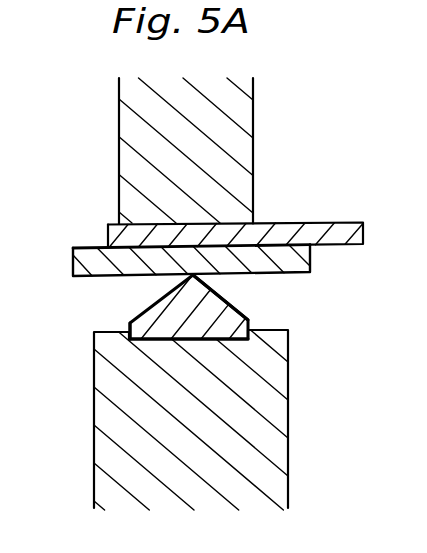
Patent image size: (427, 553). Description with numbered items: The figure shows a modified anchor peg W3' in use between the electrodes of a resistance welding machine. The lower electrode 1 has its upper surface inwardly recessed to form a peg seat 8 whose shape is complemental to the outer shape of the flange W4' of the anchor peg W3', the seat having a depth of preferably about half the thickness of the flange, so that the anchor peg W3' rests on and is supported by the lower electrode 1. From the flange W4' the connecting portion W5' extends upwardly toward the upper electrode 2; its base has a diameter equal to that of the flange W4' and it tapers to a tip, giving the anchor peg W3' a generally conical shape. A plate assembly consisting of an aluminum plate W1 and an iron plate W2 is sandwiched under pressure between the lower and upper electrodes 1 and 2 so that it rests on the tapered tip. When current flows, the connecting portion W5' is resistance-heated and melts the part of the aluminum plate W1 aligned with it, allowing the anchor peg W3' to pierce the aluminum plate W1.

The lower electrode 1 is at (288, 432).
The upper electrode 2 is at (253, 105).
The peg seat 8 is at (223, 333).
The aluminum plate W1 is at (90, 247).
The iron plate W2 is at (312, 223).
The anchor peg W3' is at (79, 315).
The flange W4' is at (130, 382).
The connecting portion W5' is at (286, 297).